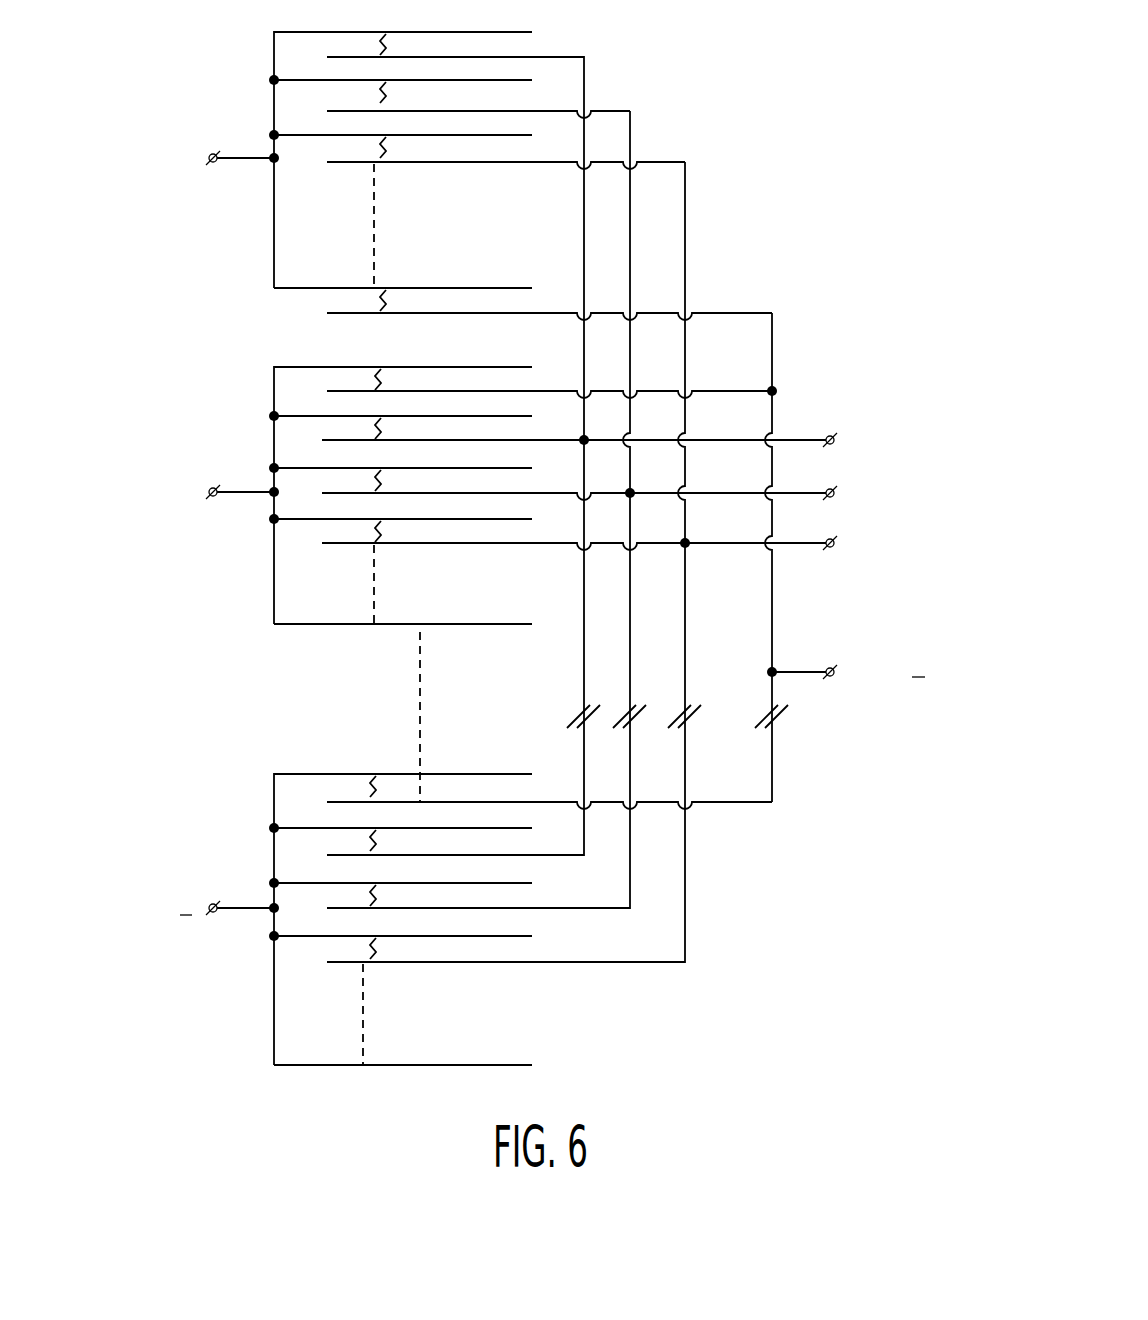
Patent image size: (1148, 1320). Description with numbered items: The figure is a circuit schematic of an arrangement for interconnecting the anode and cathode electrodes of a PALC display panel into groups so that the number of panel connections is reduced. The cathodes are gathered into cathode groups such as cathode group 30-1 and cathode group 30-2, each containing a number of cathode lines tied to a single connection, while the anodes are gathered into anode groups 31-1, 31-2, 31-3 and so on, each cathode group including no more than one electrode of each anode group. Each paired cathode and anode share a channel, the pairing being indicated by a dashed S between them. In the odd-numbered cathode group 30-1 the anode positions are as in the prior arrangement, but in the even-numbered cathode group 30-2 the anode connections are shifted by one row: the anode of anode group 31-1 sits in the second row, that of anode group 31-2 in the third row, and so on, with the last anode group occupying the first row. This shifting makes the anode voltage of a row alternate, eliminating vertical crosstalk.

The cathode group 30-1 is at (418, 32).
The cathode group 30-2 is at (345, 367).
The anode group 31-1 is at (552, 57).
The anode group 31-2 is at (560, 111).
The anode group 31-3 is at (662, 162).